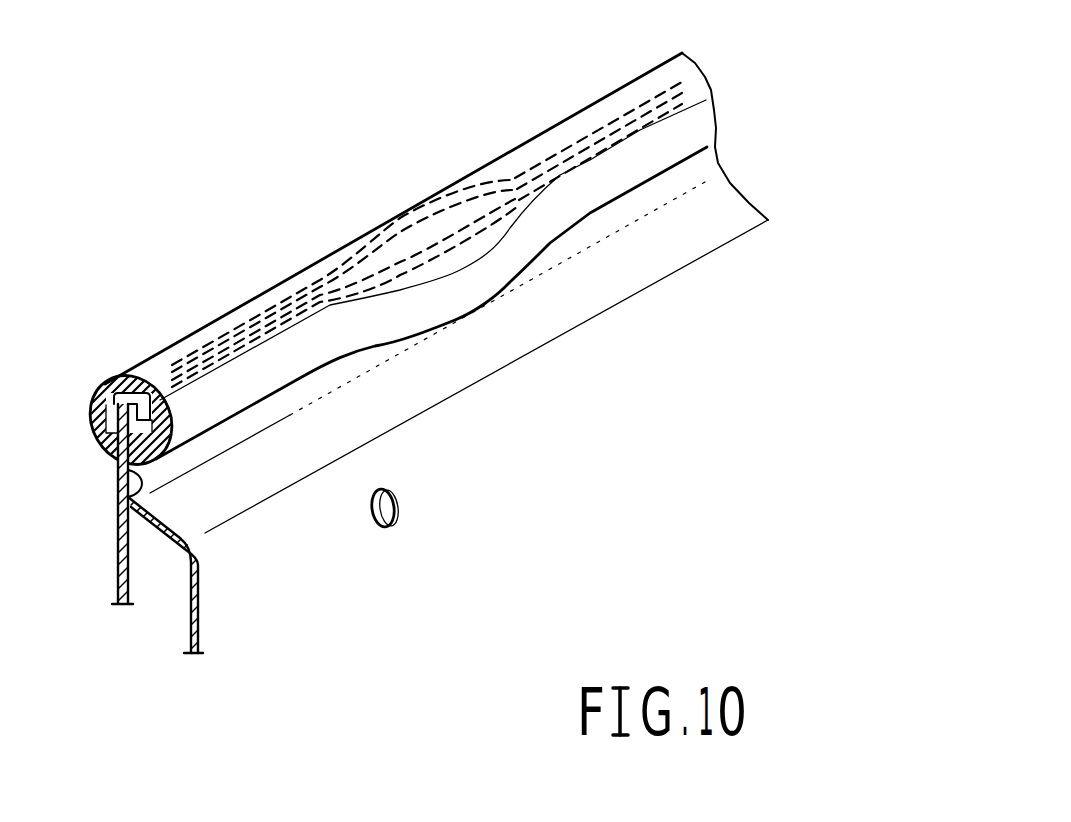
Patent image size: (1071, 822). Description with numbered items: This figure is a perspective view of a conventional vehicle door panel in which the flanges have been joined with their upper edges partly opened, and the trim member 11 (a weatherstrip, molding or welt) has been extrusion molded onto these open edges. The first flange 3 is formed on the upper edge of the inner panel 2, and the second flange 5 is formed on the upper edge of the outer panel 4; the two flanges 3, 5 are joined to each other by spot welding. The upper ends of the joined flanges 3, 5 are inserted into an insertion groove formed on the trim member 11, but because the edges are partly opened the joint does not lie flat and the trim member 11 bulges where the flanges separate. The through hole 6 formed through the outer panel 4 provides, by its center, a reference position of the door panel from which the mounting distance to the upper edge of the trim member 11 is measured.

The trim member 11 is at (232, 312).
The inner panel 2 is at (118, 580).
The first flange 3 is at (118, 470).
The outer panel 4 is at (198, 593).
The second flange 5 is at (118, 506).
The through hole 6 is at (397, 516).